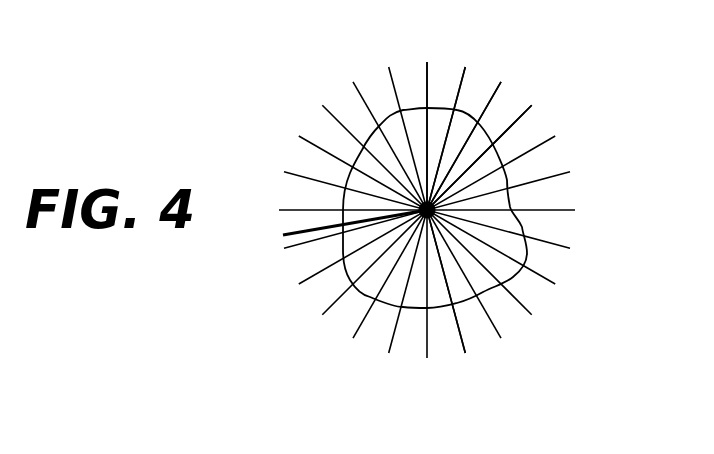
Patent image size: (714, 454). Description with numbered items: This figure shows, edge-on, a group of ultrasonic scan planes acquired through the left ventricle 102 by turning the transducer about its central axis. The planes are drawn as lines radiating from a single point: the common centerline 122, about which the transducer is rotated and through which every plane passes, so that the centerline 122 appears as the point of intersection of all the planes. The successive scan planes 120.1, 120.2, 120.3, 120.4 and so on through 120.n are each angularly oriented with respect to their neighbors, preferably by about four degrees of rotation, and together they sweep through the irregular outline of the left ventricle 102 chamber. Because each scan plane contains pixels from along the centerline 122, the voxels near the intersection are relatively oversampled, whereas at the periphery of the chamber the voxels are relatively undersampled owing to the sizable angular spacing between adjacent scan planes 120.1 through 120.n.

The left ventricle 102 is at (530, 253).
The centerline 122 is at (284, 235).
The scan plane 120.1 is at (427, 72).
The scan plane 120.2 is at (467, 78).
The scan plane 120.3 is at (497, 97).
The scan plane 120.4 is at (527, 115).
The scan plane 120.n is at (463, 343).